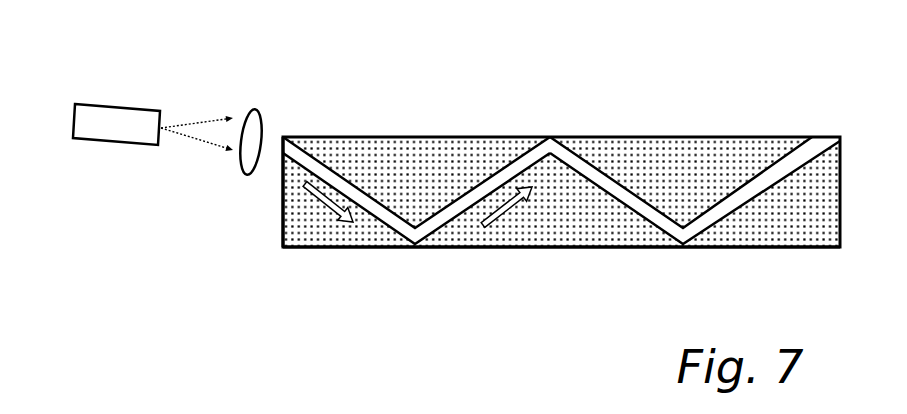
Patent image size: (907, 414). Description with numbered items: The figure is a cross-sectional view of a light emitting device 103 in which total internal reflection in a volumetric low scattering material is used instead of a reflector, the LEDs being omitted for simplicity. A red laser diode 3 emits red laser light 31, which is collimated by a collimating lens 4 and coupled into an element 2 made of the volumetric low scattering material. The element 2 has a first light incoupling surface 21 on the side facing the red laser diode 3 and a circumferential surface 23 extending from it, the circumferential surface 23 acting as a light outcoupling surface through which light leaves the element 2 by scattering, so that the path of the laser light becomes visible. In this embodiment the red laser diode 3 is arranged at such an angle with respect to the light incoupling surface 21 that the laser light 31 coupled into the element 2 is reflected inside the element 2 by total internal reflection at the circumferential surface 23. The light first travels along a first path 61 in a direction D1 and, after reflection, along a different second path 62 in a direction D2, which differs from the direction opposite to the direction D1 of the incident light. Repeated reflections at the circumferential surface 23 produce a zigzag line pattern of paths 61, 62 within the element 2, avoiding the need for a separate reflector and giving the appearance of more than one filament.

The element 2 is at (507, 137).
The red laser diode 3 is at (117, 122).
The collimating lens 4 is at (255, 120).
The first light incoupling surface 21 is at (283, 205).
The circumferential surface 23 is at (767, 247).
The red laser light 31 is at (187, 122).
The first path 61 is at (373, 220).
The second path 62 is at (488, 187).
The light emitting device 103 is at (633, 108).
The direction of propagation of incident red laser light D1 is at (328, 205).
The direction of propagation of reflected red laser light D2 is at (500, 215).